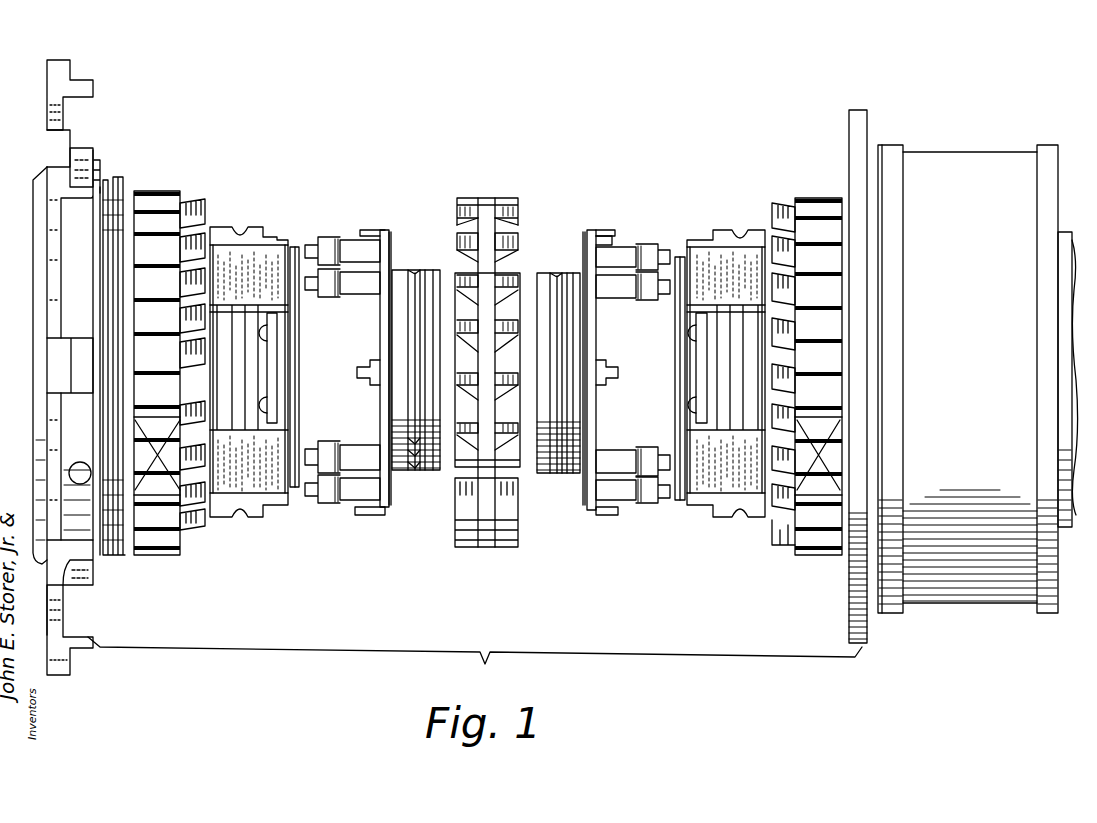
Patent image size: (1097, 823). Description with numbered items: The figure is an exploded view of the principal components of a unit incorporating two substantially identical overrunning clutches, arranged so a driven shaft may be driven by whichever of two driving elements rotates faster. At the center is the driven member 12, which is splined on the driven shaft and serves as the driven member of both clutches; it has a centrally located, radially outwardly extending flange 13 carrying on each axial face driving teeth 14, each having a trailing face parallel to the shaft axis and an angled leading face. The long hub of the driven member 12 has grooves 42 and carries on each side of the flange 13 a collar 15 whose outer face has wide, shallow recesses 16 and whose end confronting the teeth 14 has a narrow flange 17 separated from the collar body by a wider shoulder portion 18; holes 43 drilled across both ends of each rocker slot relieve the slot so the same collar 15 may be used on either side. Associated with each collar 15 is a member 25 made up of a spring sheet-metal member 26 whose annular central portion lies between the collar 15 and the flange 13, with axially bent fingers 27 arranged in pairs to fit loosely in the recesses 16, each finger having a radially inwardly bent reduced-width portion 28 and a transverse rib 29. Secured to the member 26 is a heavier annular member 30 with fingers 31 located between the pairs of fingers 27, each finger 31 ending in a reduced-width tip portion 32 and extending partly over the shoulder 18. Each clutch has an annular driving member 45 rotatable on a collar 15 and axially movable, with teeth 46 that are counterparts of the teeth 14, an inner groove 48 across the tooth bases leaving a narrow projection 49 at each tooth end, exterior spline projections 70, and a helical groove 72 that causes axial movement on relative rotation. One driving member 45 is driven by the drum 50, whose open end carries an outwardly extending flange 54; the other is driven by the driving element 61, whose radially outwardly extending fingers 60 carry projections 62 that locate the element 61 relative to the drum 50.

The driven member 12 is at (425, 475).
The flange 13 is at (471, 351).
The driving teeth 14 is at (465, 318).
The collar 15 is at (255, 230).
The recesses 16 is at (220, 250).
The flange 17 is at (292, 498).
The shoulder portion 18 is at (276, 500).
The spring member 25 is at (482, 368).
The spring sheet metal member 26 is at (388, 500).
The fingers 27 is at (368, 285).
The reduced-width end portion 28 is at (310, 285).
The transverse rib 29 is at (342, 242).
The annular member 30 is at (380, 338).
The fingers 31 is at (373, 232).
The tip portion 32 is at (362, 372).
The grooves 42 is at (486, 379).
The holes 43 is at (272, 318).
The driving member 45 is at (487, 396).
The teeth 46 is at (198, 400).
The groove 48 is at (185, 335).
The projection 49 is at (213, 475).
The drum 50 is at (962, 598).
The flange 54 is at (858, 122).
The fingers 60 is at (47, 80).
The driving element 61 is at (38, 280).
The projections 62 is at (90, 90).
The projections 70 is at (143, 298).
The helical grooves 72 is at (147, 448).